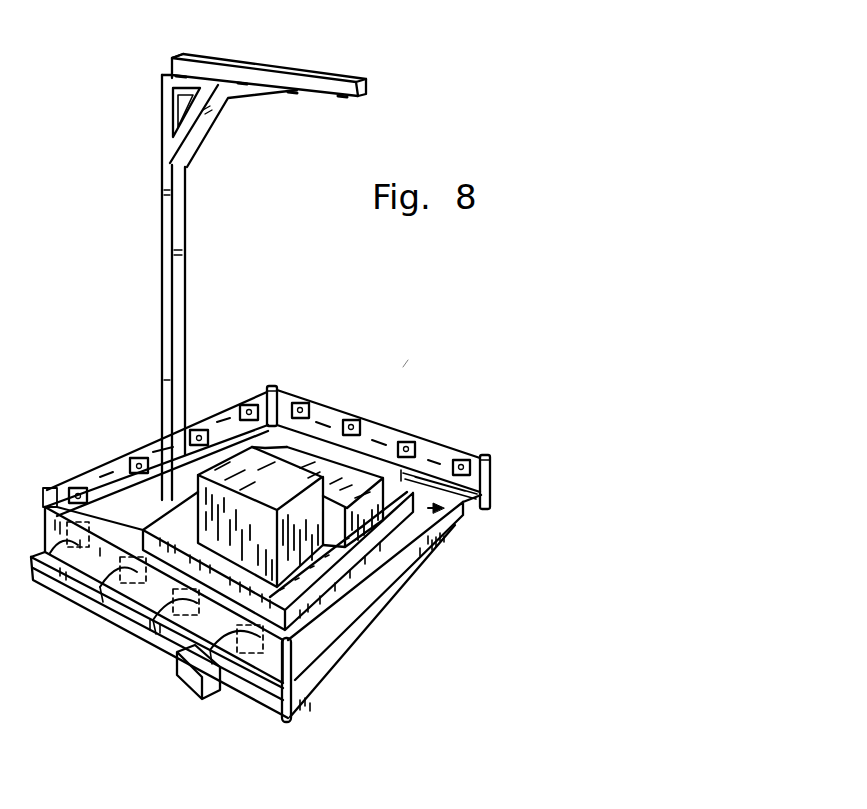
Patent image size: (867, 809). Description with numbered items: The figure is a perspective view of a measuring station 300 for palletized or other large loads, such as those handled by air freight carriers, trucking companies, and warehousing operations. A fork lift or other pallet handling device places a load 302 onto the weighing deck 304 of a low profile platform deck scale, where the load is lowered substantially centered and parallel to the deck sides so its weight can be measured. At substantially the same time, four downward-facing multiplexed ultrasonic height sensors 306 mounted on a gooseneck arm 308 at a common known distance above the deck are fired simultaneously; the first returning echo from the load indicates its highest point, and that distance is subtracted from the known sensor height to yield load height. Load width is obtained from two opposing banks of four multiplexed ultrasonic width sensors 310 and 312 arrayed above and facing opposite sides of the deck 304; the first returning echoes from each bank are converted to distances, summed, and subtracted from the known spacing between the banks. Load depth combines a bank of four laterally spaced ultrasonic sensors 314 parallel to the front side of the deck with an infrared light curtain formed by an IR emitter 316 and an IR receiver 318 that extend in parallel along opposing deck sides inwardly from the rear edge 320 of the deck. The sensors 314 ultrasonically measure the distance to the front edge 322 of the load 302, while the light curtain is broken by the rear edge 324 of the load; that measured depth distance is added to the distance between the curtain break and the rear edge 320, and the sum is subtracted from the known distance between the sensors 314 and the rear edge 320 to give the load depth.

The measuring station 300 is at (402, 368).
The load 302 is at (467, 513).
The weighing deck 304 is at (371, 583).
The ultrasonic height sensors 306 is at (212, 72).
The gooseneck arm 308 is at (209, 126).
The ultrasonic width sensors 310 is at (303, 403).
The ultrasonic width sensors 312 is at (232, 633).
The ultrasonic depth sensors 314 is at (80, 490).
The IR emitter 316 is at (490, 505).
The IR receiver 318 is at (268, 683).
The rear edge of deck 320 is at (343, 642).
The front edge of load 322 is at (275, 390).
The rear edge of load 324 is at (380, 518).